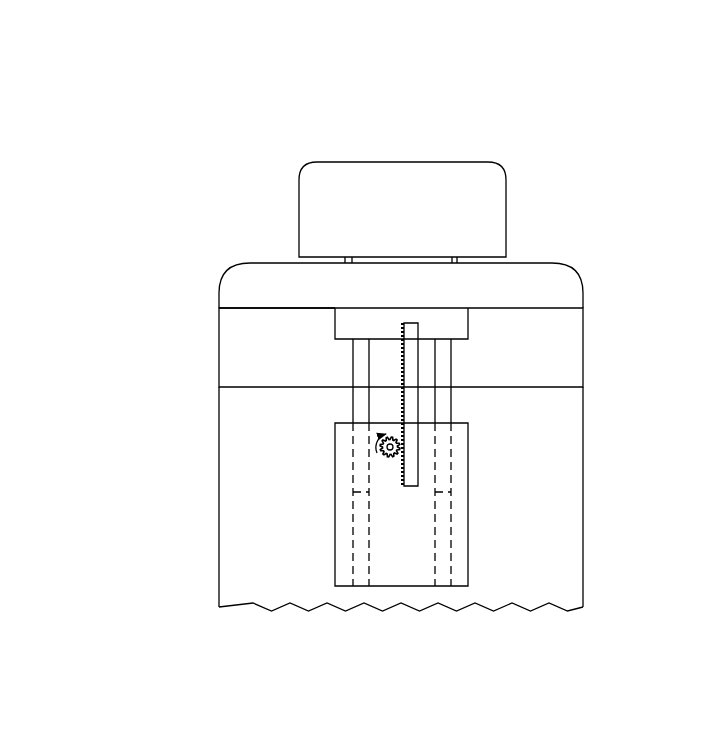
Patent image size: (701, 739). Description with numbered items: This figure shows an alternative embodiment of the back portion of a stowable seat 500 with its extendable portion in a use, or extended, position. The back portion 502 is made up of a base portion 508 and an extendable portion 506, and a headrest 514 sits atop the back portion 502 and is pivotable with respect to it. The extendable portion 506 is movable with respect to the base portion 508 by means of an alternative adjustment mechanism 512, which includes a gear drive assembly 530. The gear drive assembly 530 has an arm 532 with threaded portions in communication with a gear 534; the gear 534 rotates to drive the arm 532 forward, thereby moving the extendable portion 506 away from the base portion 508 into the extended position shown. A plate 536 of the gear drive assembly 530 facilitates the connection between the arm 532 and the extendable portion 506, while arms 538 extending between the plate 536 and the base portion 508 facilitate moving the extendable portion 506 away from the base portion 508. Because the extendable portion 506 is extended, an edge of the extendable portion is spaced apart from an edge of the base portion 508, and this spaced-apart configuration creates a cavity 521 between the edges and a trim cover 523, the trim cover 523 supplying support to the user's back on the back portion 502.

The stowable seat 500 is at (496, 120).
The back portion 502 is at (206, 472).
The extendable portion 506 is at (562, 281).
The base portion 508 is at (572, 463).
The adjustment mechanism 512 is at (261, 212).
The headrest 514 is at (500, 184).
The cavity 521 is at (254, 326).
The trim cover 523 is at (564, 342).
The gear drive assembly 530 is at (254, 562).
The arm 532 is at (412, 348).
The gear 534 is at (382, 447).
The plate 536 is at (458, 316).
The arms 538 is at (354, 380).